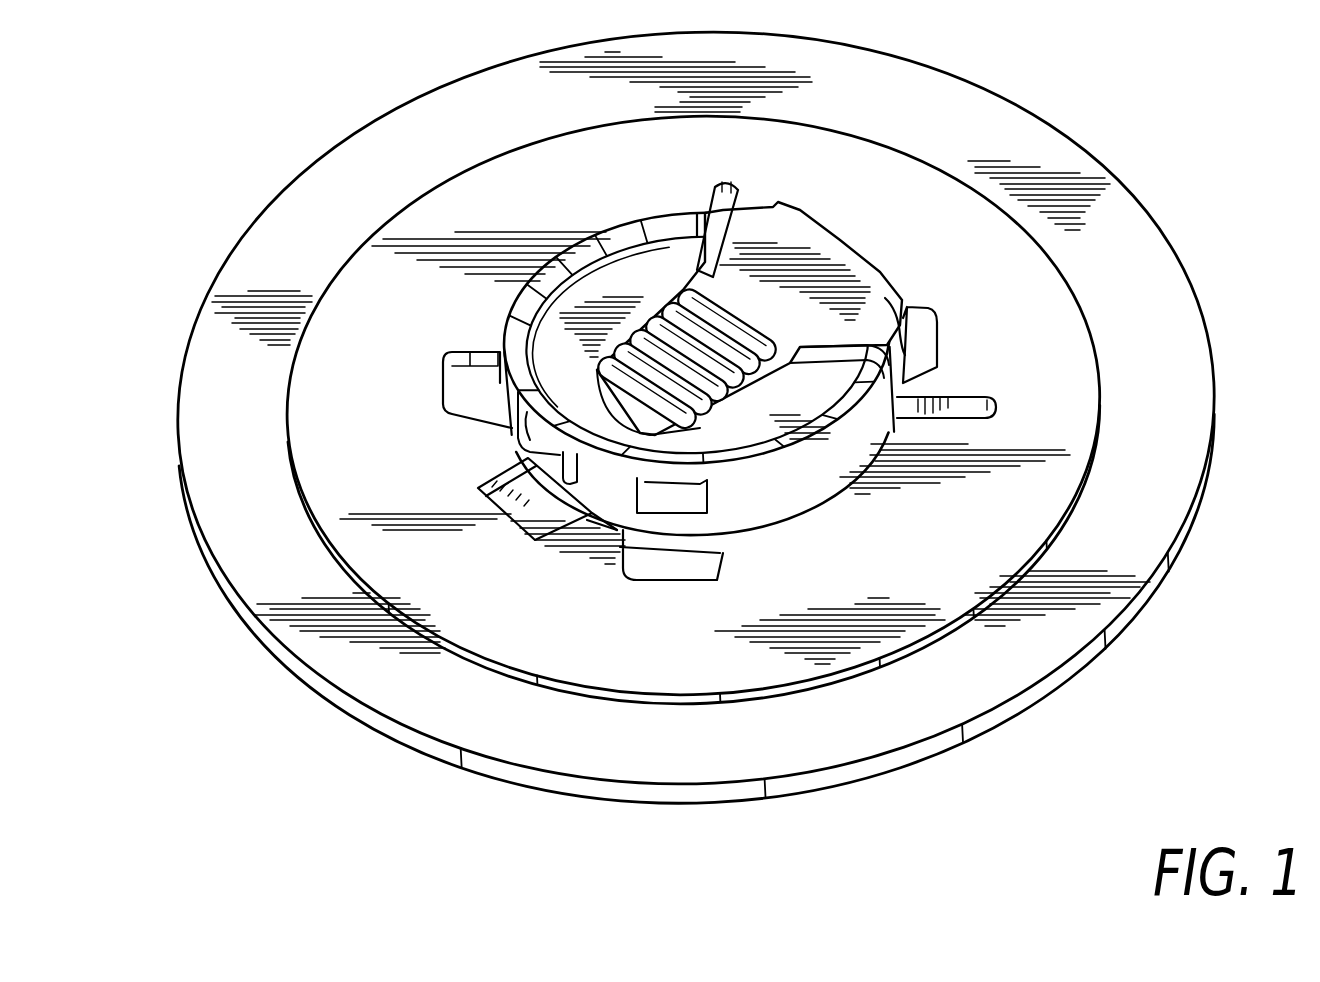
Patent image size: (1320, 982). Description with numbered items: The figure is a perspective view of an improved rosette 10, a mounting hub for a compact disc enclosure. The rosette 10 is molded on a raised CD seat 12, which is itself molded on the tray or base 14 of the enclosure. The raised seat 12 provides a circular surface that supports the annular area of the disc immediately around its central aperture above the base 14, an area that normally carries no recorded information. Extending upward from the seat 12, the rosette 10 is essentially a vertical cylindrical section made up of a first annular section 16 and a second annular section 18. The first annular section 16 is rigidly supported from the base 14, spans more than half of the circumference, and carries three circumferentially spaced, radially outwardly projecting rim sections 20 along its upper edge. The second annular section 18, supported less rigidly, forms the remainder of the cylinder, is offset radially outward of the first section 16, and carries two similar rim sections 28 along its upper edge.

The rosette 10 is at (694, 360).
The raised CD seat 12 is at (576, 653).
The base 14 is at (936, 726).
The first annular section 16 is at (634, 277).
The second annular section 18 is at (840, 252).
The rim sections 20 is at (540, 430).
The rim sections 28 is at (887, 298).